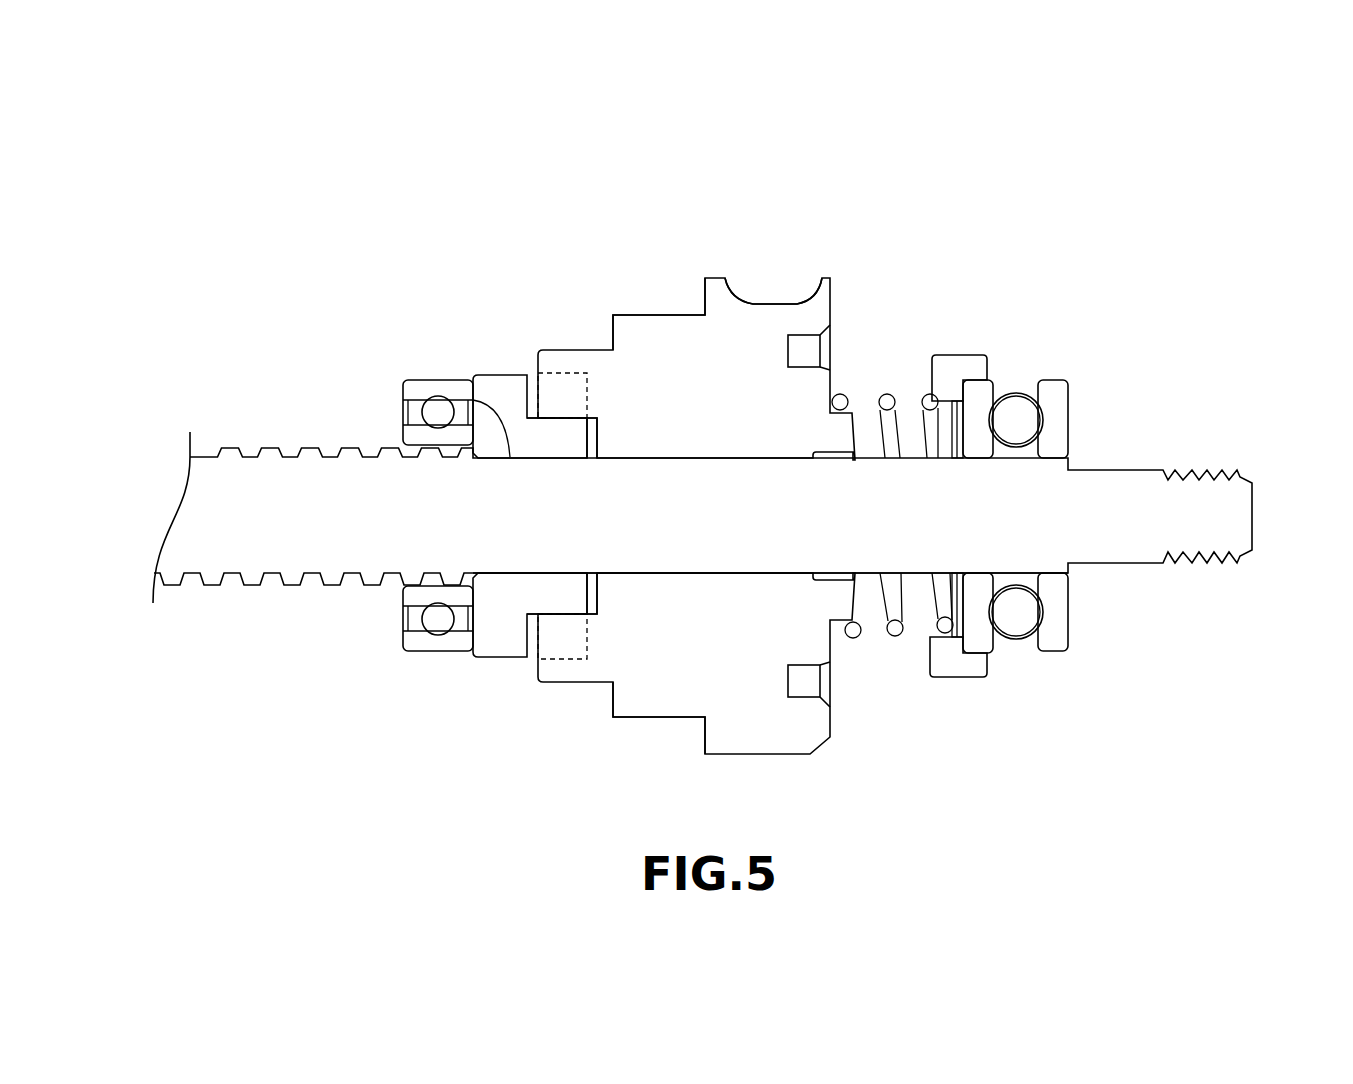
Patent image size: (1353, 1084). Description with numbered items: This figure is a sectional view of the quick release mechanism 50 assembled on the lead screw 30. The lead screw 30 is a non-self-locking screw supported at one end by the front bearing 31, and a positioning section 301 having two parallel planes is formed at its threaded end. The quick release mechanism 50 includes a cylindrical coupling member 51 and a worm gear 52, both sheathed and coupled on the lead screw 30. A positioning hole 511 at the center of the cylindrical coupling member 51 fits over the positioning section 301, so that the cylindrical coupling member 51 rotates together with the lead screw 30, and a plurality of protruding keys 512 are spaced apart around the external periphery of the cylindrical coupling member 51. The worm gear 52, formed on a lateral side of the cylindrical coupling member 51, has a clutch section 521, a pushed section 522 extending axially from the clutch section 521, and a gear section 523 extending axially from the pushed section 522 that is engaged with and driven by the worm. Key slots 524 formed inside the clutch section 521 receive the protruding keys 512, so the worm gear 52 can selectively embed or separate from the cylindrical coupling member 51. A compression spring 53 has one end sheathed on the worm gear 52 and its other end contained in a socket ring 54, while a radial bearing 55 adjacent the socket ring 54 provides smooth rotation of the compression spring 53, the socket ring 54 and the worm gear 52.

The lead screw 30 is at (290, 487).
The positioning section 301 is at (500, 570).
The front bearing 31 is at (431, 411).
The quick release mechanism 50 is at (955, 213).
The cylindrical coupling member 51 is at (510, 405).
The positioning hole 511 is at (473, 399).
The protruding key 512 is at (562, 433).
The worm gear 52 is at (803, 275).
The clutch section 521 is at (568, 367).
The pushed section 522 is at (667, 333).
The gear section 523 is at (737, 303).
The key slots 524 is at (593, 433).
The compression spring 53 is at (882, 393).
The socket ring 54 is at (948, 373).
The radial bearing 55 is at (1030, 418).